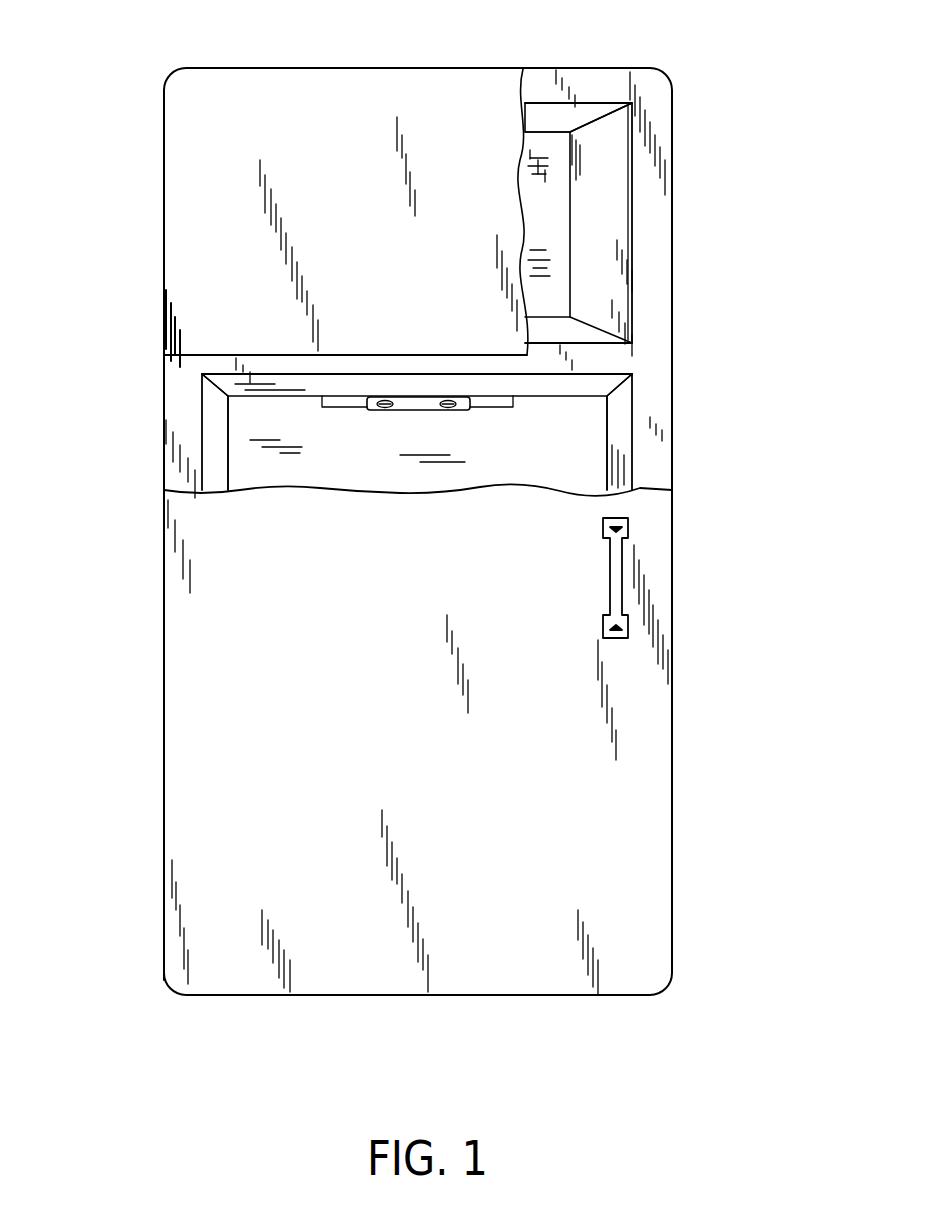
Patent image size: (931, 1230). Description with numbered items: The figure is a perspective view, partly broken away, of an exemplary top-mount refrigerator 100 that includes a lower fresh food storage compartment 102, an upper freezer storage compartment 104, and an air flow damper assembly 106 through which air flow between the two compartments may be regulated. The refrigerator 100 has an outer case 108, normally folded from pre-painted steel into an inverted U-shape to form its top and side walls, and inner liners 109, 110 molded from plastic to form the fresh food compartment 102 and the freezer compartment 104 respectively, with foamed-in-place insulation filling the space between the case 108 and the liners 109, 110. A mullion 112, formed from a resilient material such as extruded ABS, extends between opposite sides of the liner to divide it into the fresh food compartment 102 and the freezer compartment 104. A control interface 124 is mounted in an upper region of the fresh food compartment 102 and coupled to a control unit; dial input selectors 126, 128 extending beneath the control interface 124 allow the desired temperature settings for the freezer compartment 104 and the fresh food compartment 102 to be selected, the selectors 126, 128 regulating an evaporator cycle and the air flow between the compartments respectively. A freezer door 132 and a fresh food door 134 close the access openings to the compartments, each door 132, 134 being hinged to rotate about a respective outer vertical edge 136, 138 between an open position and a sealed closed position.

The top-mount refrigerator 100 is at (704, 100).
The fresh food storage compartment 102 is at (590, 455).
The freezer storage compartment 104 is at (550, 230).
The air flow damper assembly 106 is at (520, 412).
The outer case 108 is at (164, 470).
The inner liner 109 is at (218, 437).
The inner liner 110 is at (568, 118).
The mullion 112 is at (605, 355).
The control interface 124 is at (407, 393).
The dial input selector 126 is at (450, 410).
The dial input selector 128 is at (387, 410).
The freezer door 132 is at (326, 134).
The fresh food door 134 is at (330, 686).
The outer vertical edge 136 is at (164, 742).
The outer vertical edge 138 is at (164, 222).